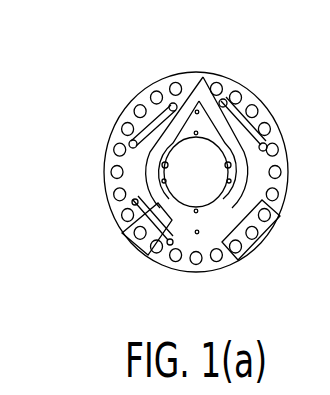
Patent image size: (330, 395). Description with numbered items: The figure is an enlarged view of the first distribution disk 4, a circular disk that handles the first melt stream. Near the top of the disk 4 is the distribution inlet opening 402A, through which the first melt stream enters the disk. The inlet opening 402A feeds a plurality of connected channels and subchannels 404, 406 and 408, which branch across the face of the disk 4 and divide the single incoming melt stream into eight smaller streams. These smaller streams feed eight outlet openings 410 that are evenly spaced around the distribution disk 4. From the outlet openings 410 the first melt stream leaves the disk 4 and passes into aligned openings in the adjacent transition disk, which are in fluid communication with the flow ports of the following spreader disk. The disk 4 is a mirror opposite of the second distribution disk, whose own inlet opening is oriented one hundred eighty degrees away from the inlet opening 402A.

The first distribution disk 4 is at (262, 96).
The distribution inlet opening 402A is at (204, 77).
The channel 404 is at (172, 95).
The subchannel 406 is at (143, 185).
The subchannel 408 is at (125, 235).
The outlet openings 410 is at (232, 264).